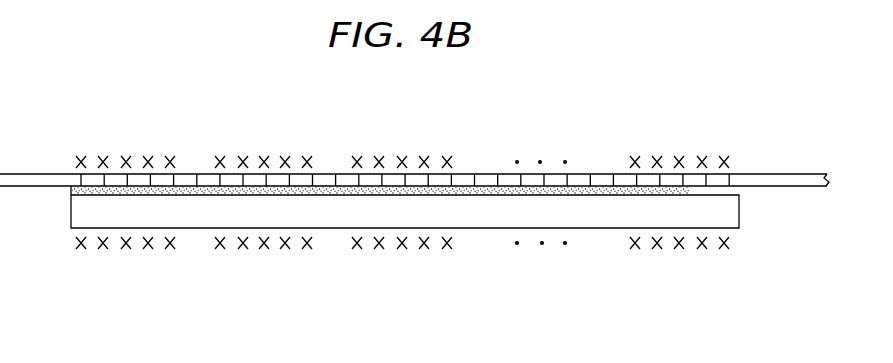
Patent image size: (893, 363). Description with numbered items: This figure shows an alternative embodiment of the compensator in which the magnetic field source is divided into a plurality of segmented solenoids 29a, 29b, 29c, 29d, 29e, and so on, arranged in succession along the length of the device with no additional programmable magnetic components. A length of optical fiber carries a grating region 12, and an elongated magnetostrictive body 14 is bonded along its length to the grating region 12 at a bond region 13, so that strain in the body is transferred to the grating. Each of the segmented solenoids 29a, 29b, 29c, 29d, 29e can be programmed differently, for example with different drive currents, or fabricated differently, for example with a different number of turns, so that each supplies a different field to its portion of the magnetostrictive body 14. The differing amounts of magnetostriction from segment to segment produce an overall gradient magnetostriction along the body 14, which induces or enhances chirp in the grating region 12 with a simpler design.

The grating region 12 is at (403, 176).
The bond region 13 is at (728, 189).
The magnetostrictive body 14 is at (190, 208).
The segmented solenoid 29a is at (122, 249).
The segmented solenoid 29b is at (277, 249).
The segmented solenoid 29c is at (413, 248).
The segmented solenoid 29d is at (547, 249).
The segmented solenoid 29e is at (668, 246).